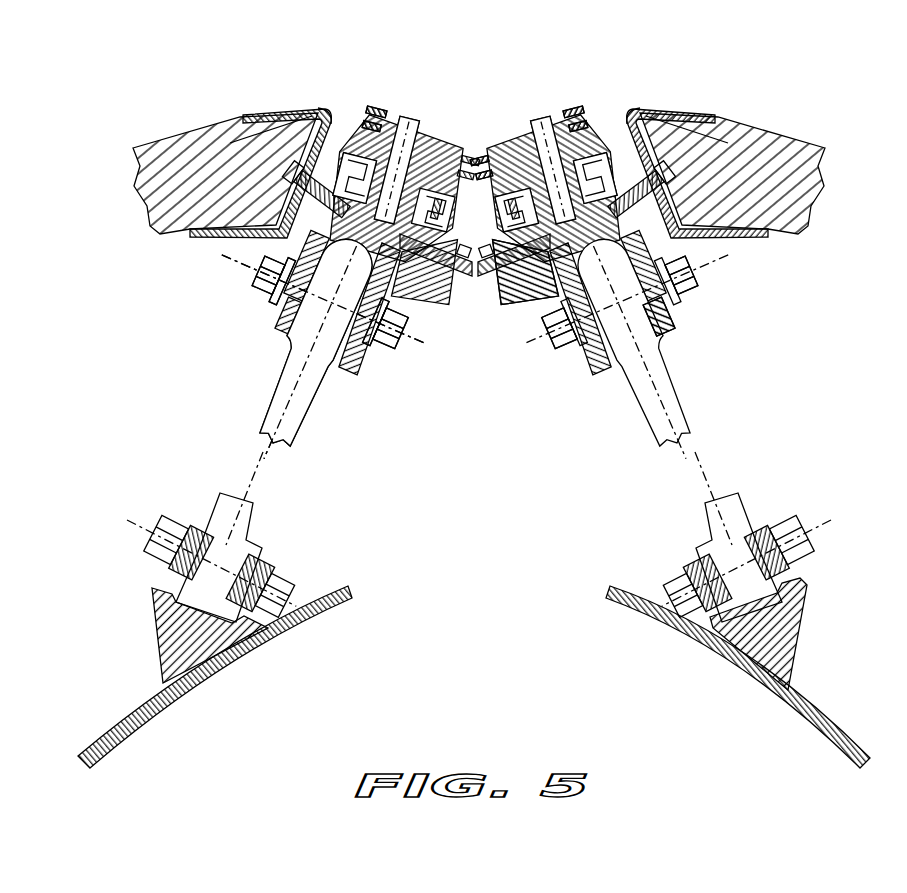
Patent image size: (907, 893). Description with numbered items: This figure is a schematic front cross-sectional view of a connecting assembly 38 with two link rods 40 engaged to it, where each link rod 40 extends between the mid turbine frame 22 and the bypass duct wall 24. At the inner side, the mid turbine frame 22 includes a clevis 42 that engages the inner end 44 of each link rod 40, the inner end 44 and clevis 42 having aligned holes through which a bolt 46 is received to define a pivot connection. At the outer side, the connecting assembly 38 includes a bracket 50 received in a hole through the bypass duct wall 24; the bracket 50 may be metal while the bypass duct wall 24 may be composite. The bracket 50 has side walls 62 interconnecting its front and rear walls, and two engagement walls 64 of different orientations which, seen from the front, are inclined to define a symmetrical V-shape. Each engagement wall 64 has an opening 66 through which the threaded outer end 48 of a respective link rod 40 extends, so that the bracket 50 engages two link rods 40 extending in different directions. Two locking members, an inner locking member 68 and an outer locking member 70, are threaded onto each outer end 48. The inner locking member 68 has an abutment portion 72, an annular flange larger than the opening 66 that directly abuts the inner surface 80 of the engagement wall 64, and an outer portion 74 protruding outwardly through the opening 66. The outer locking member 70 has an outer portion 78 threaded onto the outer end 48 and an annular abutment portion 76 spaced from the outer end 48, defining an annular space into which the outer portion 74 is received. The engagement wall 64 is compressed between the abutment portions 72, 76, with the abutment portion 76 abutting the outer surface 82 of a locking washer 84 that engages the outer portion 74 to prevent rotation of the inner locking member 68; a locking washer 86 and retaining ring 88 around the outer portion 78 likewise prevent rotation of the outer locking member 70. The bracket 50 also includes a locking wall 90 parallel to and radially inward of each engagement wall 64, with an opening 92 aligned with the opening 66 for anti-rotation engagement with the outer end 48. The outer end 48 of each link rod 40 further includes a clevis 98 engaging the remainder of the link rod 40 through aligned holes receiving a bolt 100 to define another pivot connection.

The mid turbine frame 22 is at (649, 635).
The bypass duct wall 24 is at (790, 150).
The connecting assembly 38 is at (242, 133).
The link rod 40 is at (268, 517).
The clevis 42 is at (152, 590).
The inner end 44 is at (250, 543).
The bolt 46 is at (150, 541).
The outer end 48 is at (382, 310).
The bracket 50 is at (727, 133).
The side walls 62 is at (322, 128).
The engagement walls 64 is at (468, 238).
The opening 66 is at (418, 158).
The inner locking member 68 is at (600, 160).
The outer locking member 70 is at (548, 147).
The abutment portion 72 is at (727, 250).
The outer portion 74 is at (540, 120).
The abutment portion 76 is at (352, 148).
The outer portion 78 is at (392, 140).
The inner surface 80 is at (233, 250).
The outer surface 82 is at (301, 110).
The locking washer 84 is at (300, 186).
The locking washer 86 is at (512, 142).
The retaining ring 88 is at (573, 110).
The locking wall 90 is at (513, 310).
The opening 92 is at (560, 290).
The clevis 98 is at (680, 334).
The bolt 100 is at (377, 342).